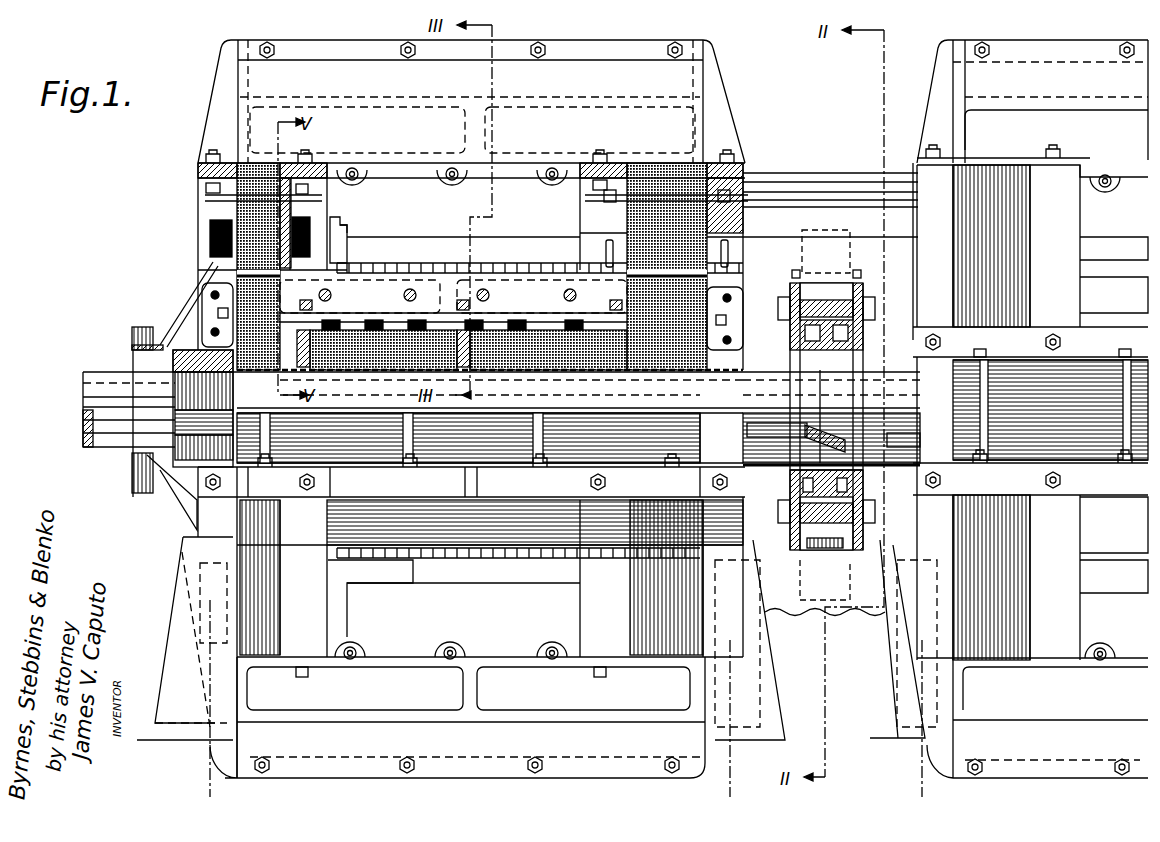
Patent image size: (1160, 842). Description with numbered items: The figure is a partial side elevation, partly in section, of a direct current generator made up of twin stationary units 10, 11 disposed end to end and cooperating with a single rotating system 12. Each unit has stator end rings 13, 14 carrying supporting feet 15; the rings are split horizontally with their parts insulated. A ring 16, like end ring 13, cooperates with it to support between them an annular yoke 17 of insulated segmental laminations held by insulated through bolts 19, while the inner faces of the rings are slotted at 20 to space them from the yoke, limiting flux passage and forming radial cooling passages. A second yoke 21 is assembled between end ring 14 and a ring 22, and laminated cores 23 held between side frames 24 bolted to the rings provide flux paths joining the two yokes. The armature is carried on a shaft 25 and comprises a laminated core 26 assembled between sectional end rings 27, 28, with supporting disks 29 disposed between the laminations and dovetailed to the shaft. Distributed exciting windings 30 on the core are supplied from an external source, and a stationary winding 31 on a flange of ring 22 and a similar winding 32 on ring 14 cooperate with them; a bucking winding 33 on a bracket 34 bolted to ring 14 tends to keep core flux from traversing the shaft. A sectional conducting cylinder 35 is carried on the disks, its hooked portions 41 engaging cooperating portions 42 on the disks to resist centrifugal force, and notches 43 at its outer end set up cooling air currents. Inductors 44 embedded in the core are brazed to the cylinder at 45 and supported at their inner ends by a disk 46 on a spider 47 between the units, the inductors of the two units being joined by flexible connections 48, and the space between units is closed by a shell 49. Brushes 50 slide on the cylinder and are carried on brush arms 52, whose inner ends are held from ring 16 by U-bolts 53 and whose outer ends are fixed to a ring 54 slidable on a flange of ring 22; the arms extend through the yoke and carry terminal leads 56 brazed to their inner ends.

The stationary unit 10 is at (768, 97).
The stationary unit 11 is at (920, 97).
The rotating system 12 is at (752, 365).
The stator end ring 13 is at (745, 175).
The stator end ring 14 is at (205, 168).
The supporting feet 15 is at (183, 623).
The ring 16 is at (580, 198).
The annular yoke 17 is at (578, 216).
The through bolts 19 is at (748, 207).
The slots 20 is at (705, 165).
The second yoke 21 is at (210, 218).
The ring 22 is at (315, 165).
The cores 23 is at (318, 70).
The side frames 24 is at (582, 48).
The shaft 25 is at (90, 408).
The laminated core 26 is at (500, 372).
The end ring 27 is at (742, 320).
The end ring 28 is at (205, 300).
The supporting disks 29 is at (385, 378).
The distributed exciting windings 30 is at (340, 318).
The stationary winding 31 is at (312, 215).
The winding 32 is at (208, 240).
The bucking winding 33 is at (137, 325).
The bracket 34 is at (170, 500).
The conducting cylinder 35 is at (385, 265).
The hooked portions 41 is at (487, 312).
The cooperating portions 42 is at (428, 266).
The notches 43 is at (334, 262).
The inductors 44 is at (770, 314).
The brazed connection 45 is at (570, 268).
The disk 46 is at (795, 272).
The spider 47 is at (790, 485).
The flexible connections 48 is at (822, 272).
The shell 49 is at (835, 170).
The brushes 50 is at (428, 270).
The brush arms 52 is at (488, 250).
The U-bolts 53 is at (606, 244).
The ring 54 is at (347, 218).
The terminal leads 56 is at (820, 230).